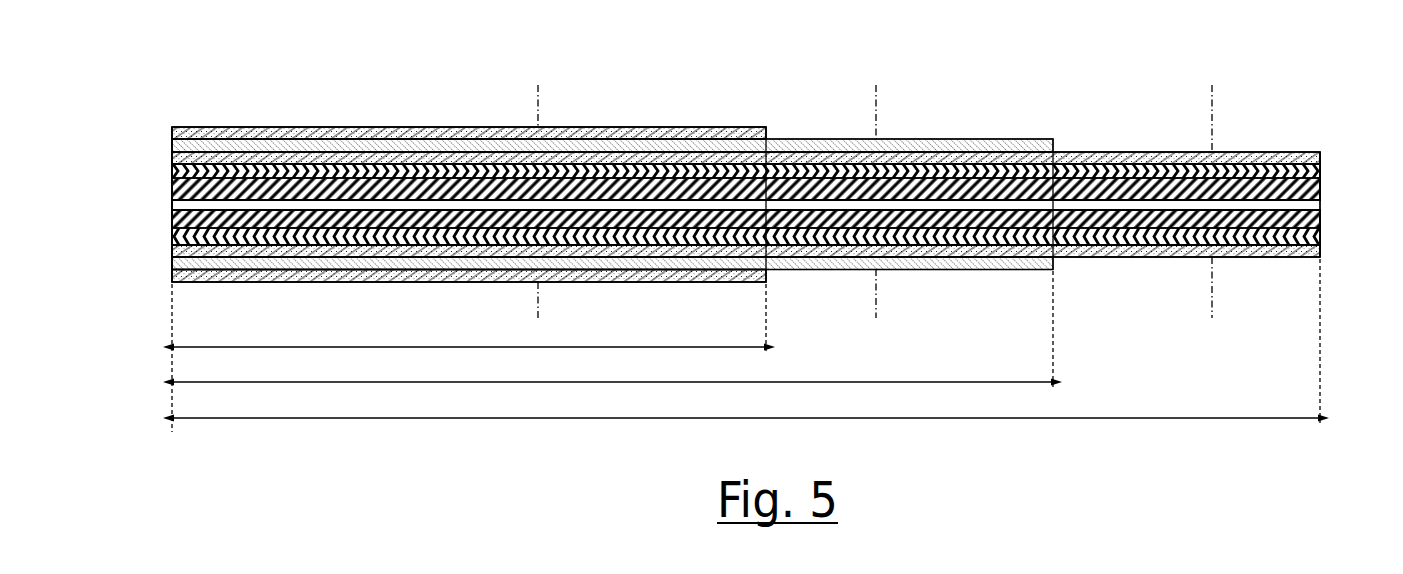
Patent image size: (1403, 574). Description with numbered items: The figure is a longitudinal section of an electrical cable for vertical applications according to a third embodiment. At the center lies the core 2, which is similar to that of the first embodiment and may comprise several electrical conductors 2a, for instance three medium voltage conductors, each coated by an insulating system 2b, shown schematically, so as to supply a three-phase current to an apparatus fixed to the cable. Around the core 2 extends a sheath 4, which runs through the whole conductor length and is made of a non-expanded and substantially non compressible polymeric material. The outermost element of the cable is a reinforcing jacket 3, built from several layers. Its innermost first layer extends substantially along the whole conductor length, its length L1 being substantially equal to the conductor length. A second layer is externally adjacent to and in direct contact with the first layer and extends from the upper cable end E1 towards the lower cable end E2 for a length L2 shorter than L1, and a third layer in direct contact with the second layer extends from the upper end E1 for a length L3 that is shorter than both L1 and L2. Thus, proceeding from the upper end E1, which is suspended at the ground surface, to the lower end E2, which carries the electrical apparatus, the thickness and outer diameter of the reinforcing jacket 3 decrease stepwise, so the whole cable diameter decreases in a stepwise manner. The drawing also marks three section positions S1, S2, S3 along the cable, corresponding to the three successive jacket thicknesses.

The core 2 is at (746, 194).
The electrical conductors 2a is at (372, 205).
The insulating system 2b is at (262, 233).
The reinforcing jacket 3 is at (746, 167).
The sheath 4 is at (316, 168).
The first end E1 is at (156, 192).
The second end E2 is at (1344, 187).
The first section S1 is at (536, 97).
The second section S2 is at (874, 97).
The third section S3 is at (1210, 97).
The length of the first layer L1 is at (746, 406).
The length of the second layer L2 is at (612, 370).
The length of the third layer L3 is at (469, 335).